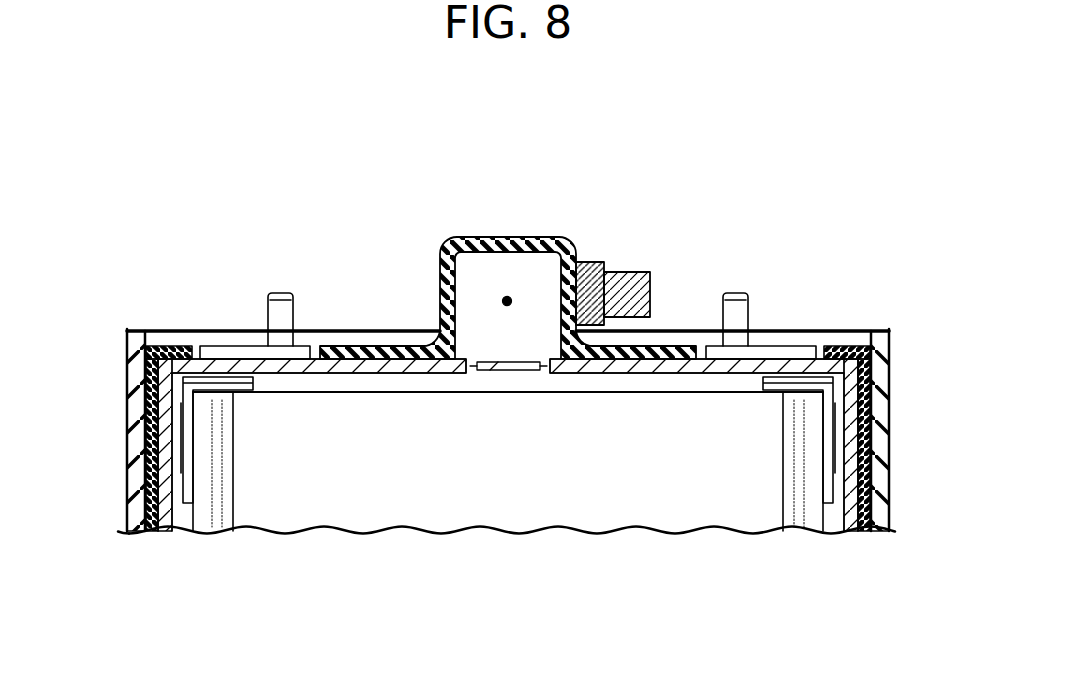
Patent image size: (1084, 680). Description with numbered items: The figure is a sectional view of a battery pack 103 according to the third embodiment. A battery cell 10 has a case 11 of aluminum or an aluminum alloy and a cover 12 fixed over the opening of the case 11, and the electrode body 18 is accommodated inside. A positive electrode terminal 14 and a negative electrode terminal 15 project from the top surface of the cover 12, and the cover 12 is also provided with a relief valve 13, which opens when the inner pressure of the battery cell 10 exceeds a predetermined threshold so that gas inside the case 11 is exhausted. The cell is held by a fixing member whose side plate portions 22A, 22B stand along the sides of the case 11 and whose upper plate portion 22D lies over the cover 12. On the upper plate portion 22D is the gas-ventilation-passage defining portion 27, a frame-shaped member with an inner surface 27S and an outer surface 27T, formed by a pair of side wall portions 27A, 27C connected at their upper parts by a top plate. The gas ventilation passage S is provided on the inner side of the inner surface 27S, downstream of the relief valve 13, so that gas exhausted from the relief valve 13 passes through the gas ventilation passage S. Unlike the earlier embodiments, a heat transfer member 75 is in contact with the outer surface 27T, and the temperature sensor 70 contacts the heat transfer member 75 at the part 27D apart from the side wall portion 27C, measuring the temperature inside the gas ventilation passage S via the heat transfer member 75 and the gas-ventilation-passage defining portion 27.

The battery pack 103 is at (205, 175).
The battery cell 10 is at (604, 490).
The case 11 is at (850, 432).
The cover 12 is at (807, 368).
The relief valve 13 is at (515, 387).
The positive electrode terminal 14 is at (278, 320).
The negative electrode terminal 15 is at (737, 320).
The electrode body 18 is at (387, 502).
The side plate portion 22A is at (150, 485).
The side plate portion 22B is at (862, 493).
The upper plate portion 22D is at (180, 351).
The gas-ventilation-passage defining portion 27 is at (504, 247).
The side wall portion 27A is at (451, 298).
The side wall portion 27C is at (564, 297).
The part of the gas-ventilation-passage defining portion 27D is at (646, 343).
The inner surface 27S is at (504, 256).
The outer surface 27T is at (533, 237).
The gas ventilation passage S is at (506, 300).
The temperature sensor 70 is at (625, 295).
The heat transfer member 75 is at (588, 285).